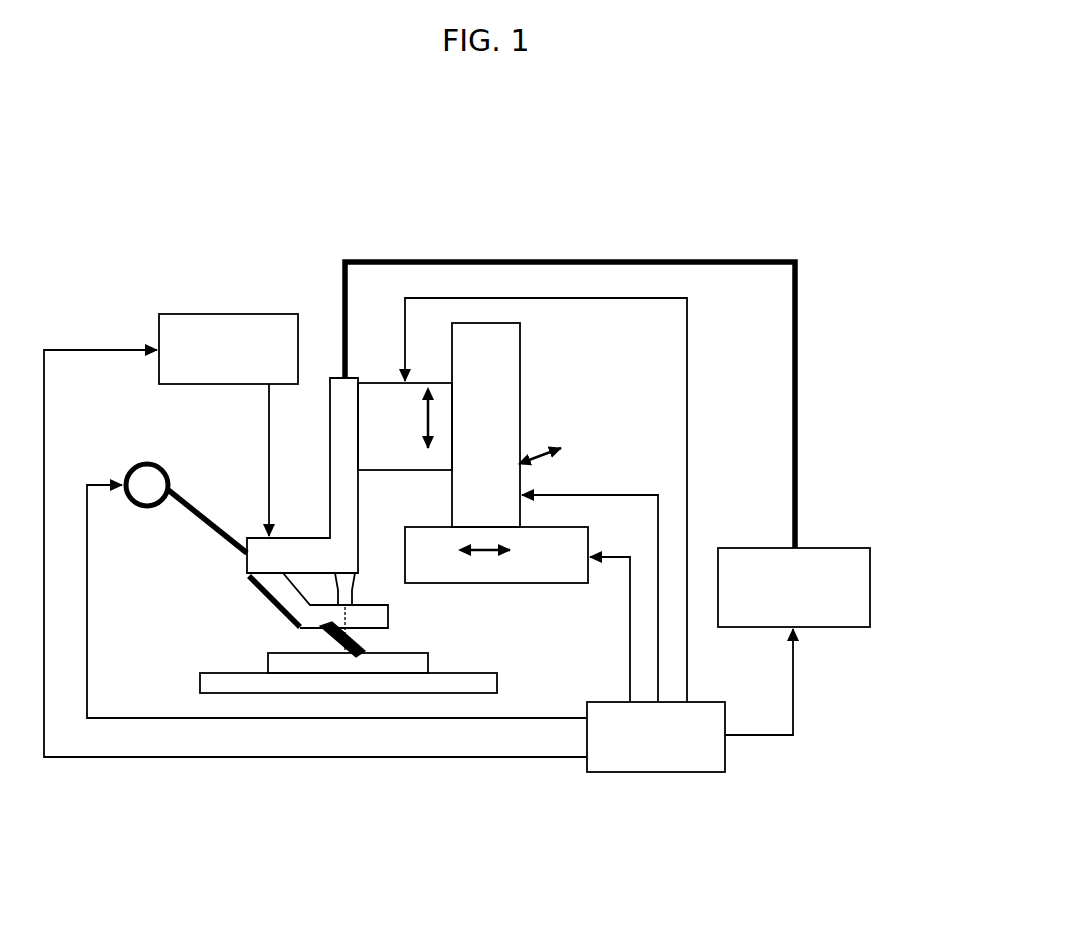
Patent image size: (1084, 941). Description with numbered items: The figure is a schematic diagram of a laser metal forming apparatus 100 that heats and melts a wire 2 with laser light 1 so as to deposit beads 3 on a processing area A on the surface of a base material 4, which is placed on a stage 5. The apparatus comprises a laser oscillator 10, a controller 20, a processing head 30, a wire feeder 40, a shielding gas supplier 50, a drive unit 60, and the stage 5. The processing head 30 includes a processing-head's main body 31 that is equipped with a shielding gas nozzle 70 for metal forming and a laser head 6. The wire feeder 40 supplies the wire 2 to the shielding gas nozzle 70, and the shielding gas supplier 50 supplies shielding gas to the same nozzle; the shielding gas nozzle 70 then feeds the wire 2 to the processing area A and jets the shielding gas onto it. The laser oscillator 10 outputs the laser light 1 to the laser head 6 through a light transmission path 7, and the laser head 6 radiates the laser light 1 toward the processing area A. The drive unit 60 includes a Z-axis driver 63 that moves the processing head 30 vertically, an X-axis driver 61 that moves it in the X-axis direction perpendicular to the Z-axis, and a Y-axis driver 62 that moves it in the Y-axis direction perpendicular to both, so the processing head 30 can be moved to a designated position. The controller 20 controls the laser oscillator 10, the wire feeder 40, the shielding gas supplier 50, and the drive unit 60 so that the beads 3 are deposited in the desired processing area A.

The laser metal forming apparatus 100 is at (828, 232).
The light transmission path 7 is at (497, 258).
The laser oscillator 10 is at (875, 578).
The controller 20 is at (727, 758).
The shielding gas supplier 50 is at (180, 312).
The wire feeder 40 is at (140, 463).
The wire 2 is at (188, 503).
The processing head 30 is at (313, 315).
The processing-head's main body 31 is at (308, 537).
The laser head 6 is at (358, 582).
The shielding gas nozzle for metal forming 70 is at (258, 590).
The laser light 1 is at (350, 637).
The beads 3 is at (318, 648).
The processing area A is at (345, 657).
The base material 4 is at (430, 662).
The stage 5 is at (498, 680).
The drive unit 60 is at (505, 451).
The X-axis driver 61 is at (525, 366).
The Z-axis driver 63 is at (425, 472).
The Y-axis driver 62 is at (545, 528).